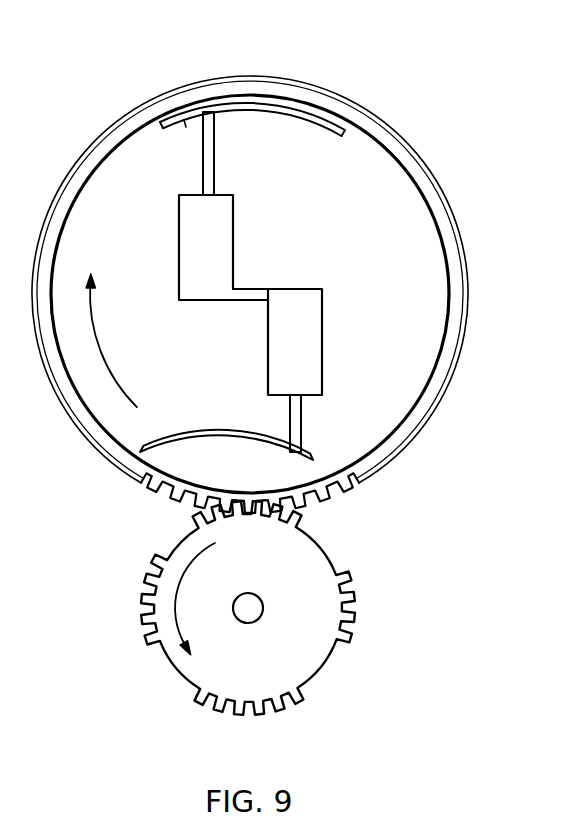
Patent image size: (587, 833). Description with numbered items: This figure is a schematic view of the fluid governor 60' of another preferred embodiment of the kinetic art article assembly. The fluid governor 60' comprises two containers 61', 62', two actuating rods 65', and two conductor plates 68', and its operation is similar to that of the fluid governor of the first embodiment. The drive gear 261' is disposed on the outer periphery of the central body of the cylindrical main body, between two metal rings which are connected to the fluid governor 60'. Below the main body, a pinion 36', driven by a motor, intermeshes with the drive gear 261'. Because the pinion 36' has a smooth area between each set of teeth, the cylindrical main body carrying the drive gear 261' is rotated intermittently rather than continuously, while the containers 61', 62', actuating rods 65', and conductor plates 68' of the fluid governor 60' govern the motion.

The fluid governor 60' is at (279, 294).
The conductor plate 68' is at (252, 109).
The container 61' is at (239, 247).
The container 62' is at (261, 342).
The actuating rod 65' is at (264, 423).
The drive gear 261' is at (199, 483).
The pinion 36' is at (261, 608).